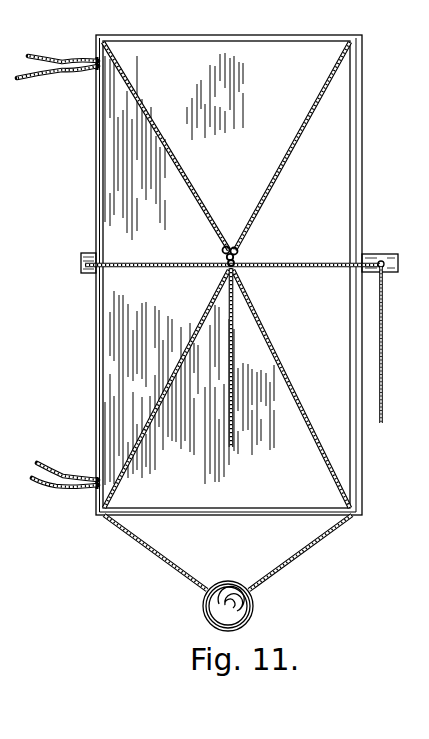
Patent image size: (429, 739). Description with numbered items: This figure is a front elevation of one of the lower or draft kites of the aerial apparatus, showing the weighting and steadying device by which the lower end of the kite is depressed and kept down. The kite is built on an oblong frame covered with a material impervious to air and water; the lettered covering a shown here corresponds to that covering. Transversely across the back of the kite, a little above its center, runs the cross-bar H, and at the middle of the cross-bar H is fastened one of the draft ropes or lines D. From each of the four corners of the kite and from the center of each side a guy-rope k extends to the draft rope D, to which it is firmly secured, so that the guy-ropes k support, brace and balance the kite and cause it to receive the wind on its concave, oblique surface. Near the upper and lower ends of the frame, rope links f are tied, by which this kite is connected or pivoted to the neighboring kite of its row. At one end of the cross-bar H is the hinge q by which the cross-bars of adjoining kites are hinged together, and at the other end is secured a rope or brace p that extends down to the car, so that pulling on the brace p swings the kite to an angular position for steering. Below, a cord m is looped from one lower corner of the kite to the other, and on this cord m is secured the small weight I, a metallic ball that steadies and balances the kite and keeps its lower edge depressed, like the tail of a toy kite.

The kite body / fabric sheet a is at (229, 275).
The guy-rope k is at (192, 204).
The draft rope D is at (225, 420).
The hinge q is at (70, 262).
The cross-bar H is at (362, 245).
The brace p is at (376, 319).
The rope link f is at (60, 70).
The cord m is at (135, 543).
The weight I is at (221, 575).